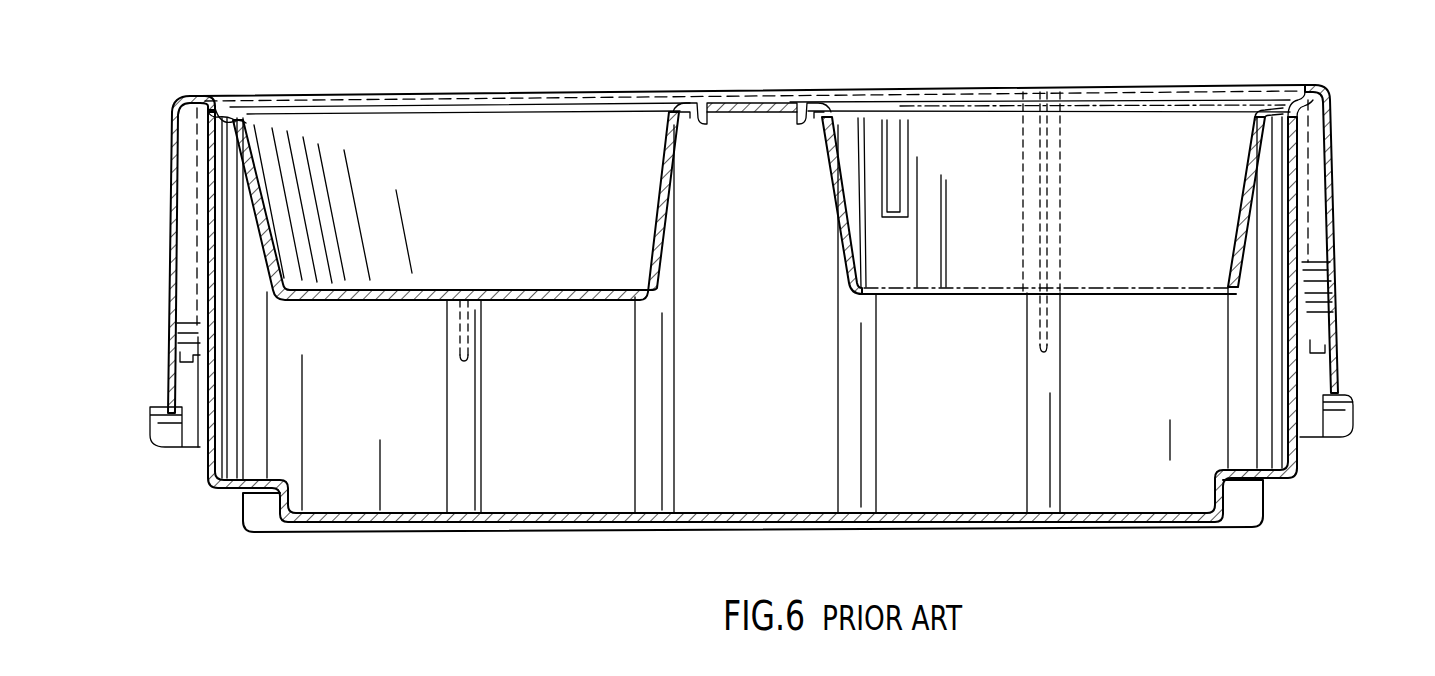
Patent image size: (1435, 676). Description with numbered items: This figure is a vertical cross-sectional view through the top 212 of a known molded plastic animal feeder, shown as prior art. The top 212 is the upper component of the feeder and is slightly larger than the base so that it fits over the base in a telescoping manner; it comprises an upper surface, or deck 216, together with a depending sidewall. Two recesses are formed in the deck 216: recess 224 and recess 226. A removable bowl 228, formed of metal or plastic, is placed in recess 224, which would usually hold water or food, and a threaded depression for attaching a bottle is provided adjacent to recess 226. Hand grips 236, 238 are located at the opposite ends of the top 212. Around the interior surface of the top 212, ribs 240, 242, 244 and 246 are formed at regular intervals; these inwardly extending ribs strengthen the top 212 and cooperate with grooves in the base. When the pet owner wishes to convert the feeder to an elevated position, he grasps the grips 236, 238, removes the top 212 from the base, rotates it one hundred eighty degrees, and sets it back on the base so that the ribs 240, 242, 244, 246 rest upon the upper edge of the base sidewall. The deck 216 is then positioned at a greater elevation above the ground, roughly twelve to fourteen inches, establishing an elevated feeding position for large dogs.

The top 212 is at (145, 238).
The upper surface or deck 216 is at (777, 103).
The recess 224 is at (228, 124).
The recess 226 is at (1150, 278).
The removable bowl 228 is at (593, 132).
The hand grip 236 is at (1340, 424).
The hand grip 238 is at (158, 432).
The rib 240 is at (1317, 322).
The rib 242 is at (1053, 335).
The rib 244 is at (462, 343).
The rib 246 is at (167, 340).